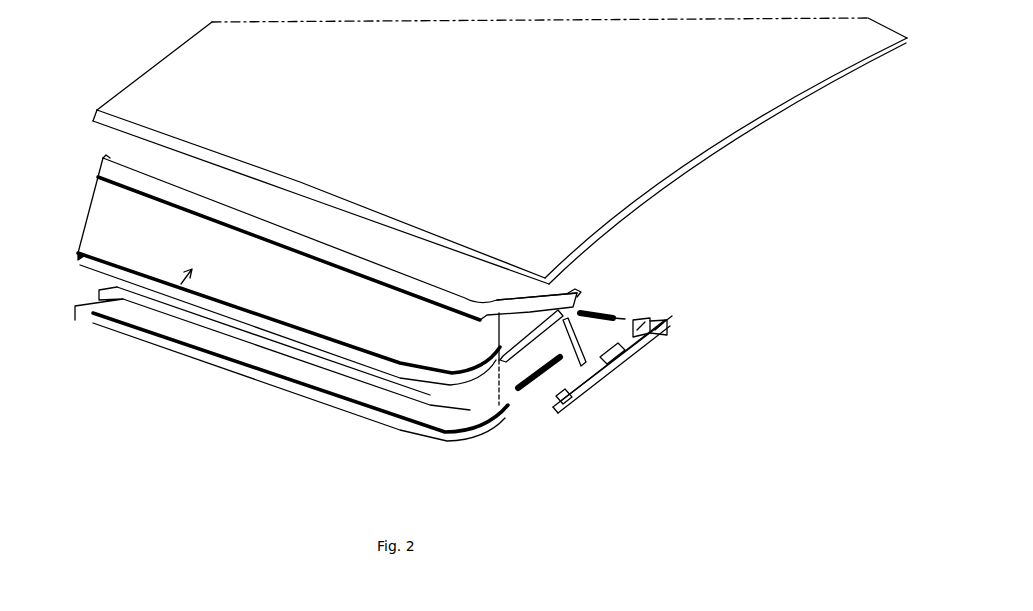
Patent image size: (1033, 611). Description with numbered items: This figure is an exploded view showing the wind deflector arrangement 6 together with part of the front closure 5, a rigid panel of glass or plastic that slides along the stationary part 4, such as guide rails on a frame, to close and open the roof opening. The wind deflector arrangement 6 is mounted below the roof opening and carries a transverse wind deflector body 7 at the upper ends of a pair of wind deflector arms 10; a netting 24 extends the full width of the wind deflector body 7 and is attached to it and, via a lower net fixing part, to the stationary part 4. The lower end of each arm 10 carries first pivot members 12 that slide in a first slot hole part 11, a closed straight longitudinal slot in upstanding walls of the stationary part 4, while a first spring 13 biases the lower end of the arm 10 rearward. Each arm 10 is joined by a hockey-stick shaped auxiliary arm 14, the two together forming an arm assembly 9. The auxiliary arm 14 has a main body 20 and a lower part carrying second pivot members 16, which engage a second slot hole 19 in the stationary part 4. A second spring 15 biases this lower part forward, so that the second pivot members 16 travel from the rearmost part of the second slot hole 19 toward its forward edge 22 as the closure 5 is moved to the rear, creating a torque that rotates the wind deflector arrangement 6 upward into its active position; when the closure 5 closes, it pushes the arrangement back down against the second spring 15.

The front closure 5 is at (683, 70).
The wind deflector body 7 is at (277, 230).
The forward edge of the second slot hole 22 is at (360, 212).
The wind deflector arrangement 6 is at (170, 243).
The netting 24 is at (98, 313).
The wind deflector arm 10 is at (607, 283).
The arm assembly 9 is at (582, 301).
The first pivot members 12 is at (608, 310).
The first spring 13 is at (627, 312).
The auxiliary arm 14 is at (600, 337).
The first slot hole part 11 is at (660, 337).
The second pivot members 16 is at (570, 368).
The stationary part 4 is at (627, 355).
The main body of the auxiliary arm 20 is at (580, 328).
The second slot hole 19 is at (598, 370).
The second spring 15 is at (566, 366).